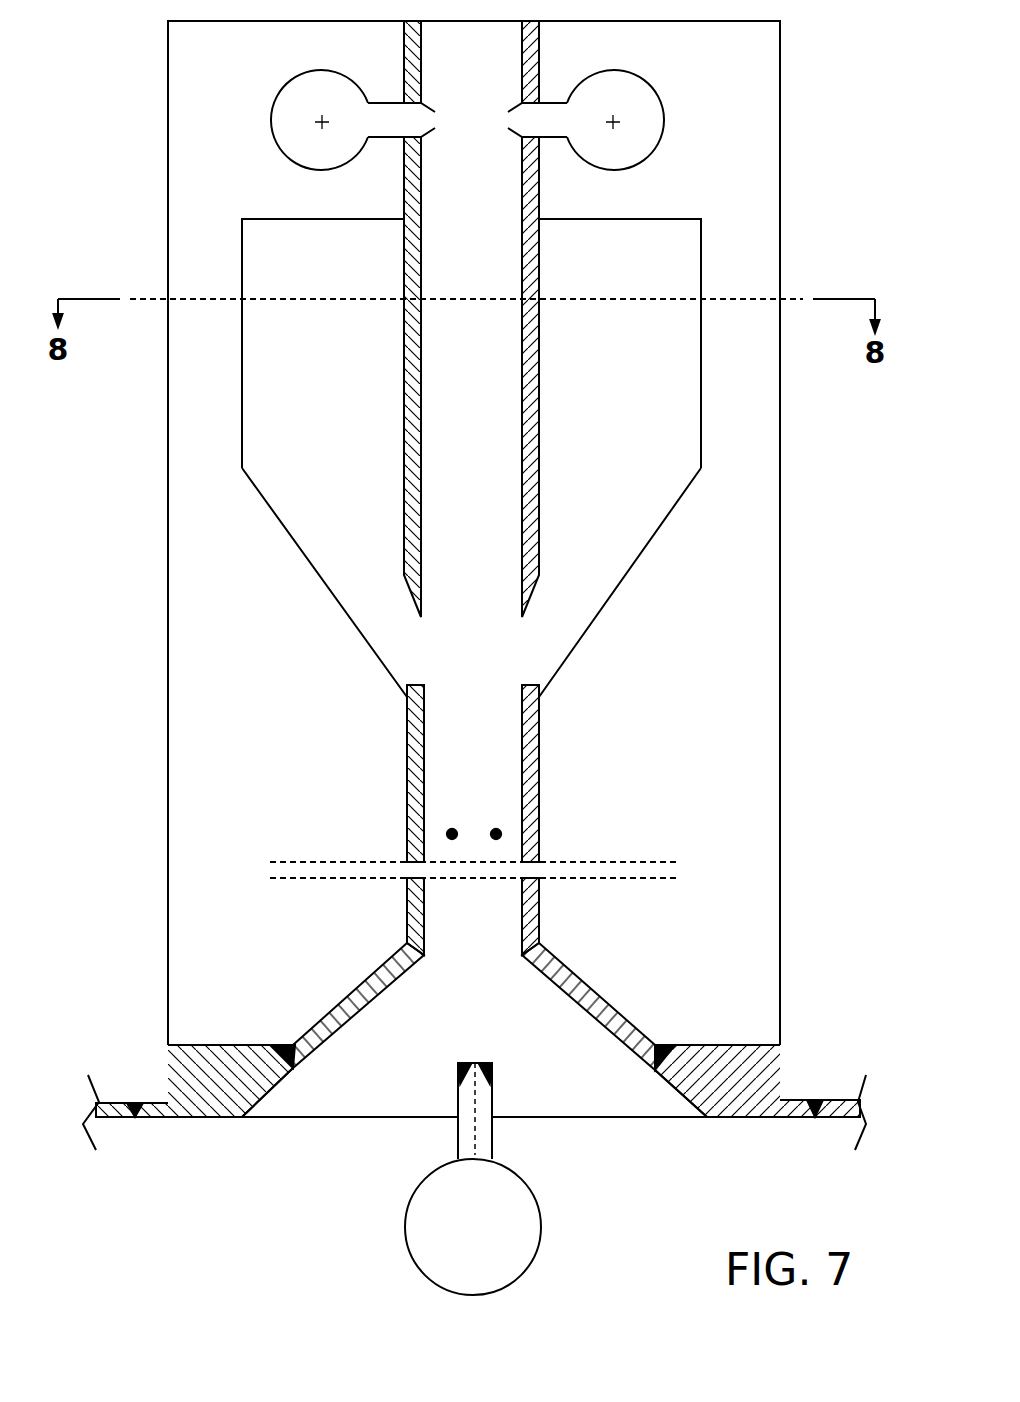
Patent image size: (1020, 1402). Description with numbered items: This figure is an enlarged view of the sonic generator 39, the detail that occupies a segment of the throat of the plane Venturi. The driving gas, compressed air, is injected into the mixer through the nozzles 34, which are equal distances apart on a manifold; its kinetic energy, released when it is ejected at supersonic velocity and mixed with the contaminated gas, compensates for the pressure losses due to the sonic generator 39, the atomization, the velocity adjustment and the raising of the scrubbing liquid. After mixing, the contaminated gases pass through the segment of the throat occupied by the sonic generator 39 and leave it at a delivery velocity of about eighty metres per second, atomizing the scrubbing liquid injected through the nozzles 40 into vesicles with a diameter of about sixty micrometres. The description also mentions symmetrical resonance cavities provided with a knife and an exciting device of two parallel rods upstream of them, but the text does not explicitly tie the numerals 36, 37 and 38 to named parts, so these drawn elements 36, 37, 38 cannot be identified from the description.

The nozzles 34 is at (475, 1063).
The electrodes 36 is at (494, 832).
The converging chamber walls 37 is at (322, 452).
The upper tube outlets 38 is at (437, 627).
The sonic generator 39 is at (680, 218).
The nozzles 40 is at (508, 122).